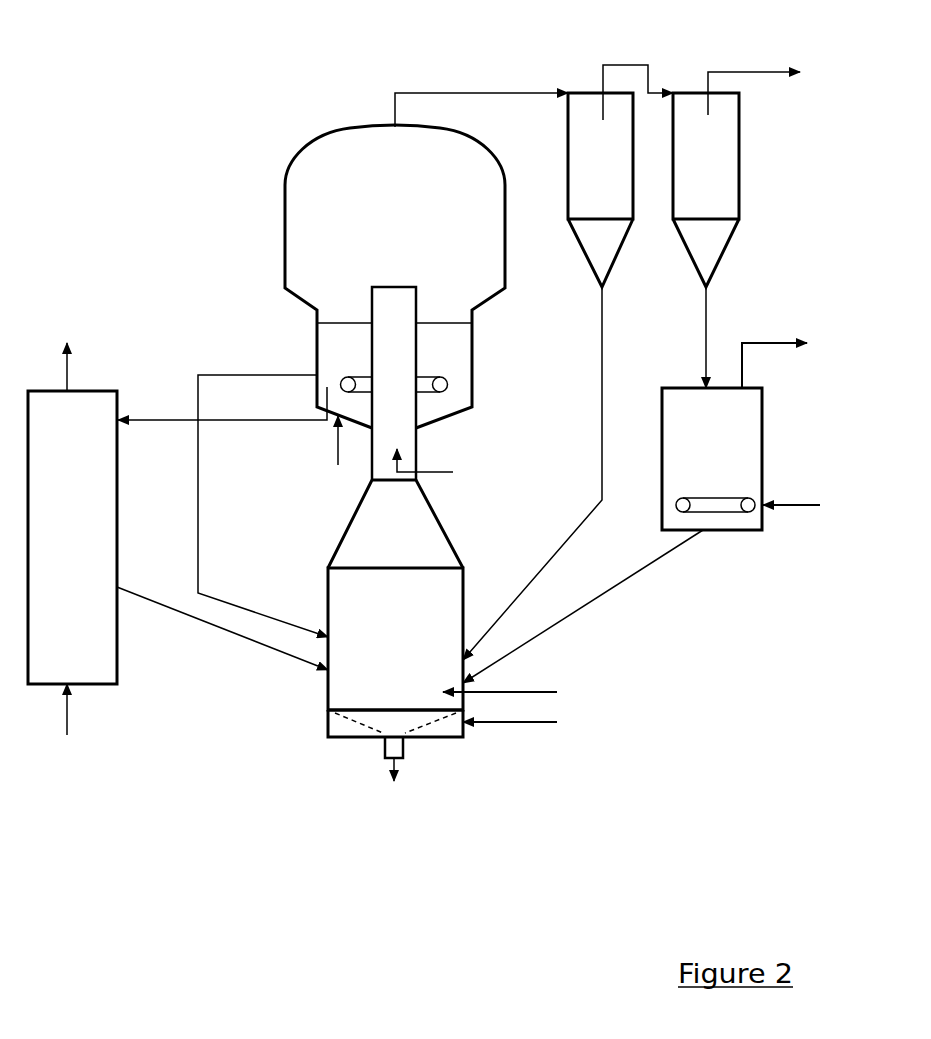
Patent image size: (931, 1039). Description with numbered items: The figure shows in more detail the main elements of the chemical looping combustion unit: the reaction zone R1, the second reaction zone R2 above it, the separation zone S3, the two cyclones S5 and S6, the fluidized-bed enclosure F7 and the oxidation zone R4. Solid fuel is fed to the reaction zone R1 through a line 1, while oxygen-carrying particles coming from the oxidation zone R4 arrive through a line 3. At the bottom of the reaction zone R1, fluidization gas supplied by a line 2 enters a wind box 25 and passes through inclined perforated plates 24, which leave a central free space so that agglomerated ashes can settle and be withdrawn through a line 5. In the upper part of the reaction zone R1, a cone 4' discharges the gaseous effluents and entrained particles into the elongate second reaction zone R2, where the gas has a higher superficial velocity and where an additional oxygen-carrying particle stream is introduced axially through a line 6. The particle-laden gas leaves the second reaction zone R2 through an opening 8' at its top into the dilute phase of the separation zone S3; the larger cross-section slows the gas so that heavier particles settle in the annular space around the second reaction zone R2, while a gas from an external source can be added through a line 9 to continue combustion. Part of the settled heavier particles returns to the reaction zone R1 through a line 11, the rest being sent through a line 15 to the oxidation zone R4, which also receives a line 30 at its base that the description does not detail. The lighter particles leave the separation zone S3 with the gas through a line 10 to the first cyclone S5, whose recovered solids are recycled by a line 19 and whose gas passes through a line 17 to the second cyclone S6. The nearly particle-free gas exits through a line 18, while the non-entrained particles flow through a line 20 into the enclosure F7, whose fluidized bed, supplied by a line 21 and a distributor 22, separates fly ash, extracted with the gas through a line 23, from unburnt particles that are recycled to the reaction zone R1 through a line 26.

The line 1 is at (538, 690).
The line 2 is at (547, 724).
The line 3 is at (268, 655).
The cone 4' is at (357, 524).
The line 5 is at (388, 765).
The line 6 is at (437, 465).
The opening 8' is at (400, 363).
The line 9 is at (337, 442).
The line 10 is at (395, 105).
The line 11 is at (217, 603).
The line 15 is at (164, 417).
The line 17 is at (602, 80).
The line 18 is at (786, 66).
The line 19 is at (553, 552).
The line 20 is at (708, 322).
The line 21 is at (778, 503).
The distributor 22 is at (735, 503).
The line 23 is at (790, 347).
The perforated plates 24 is at (433, 722).
The wind box 25 is at (327, 700).
The line 26 is at (607, 592).
The inlet to R4 30 is at (68, 712).
The reaction zone R1 is at (395, 639).
The second reaction zone R2 is at (408, 358).
The oxidation zone R4 is at (72, 513).
The separation zone S3 is at (395, 276).
The first cyclone S5 is at (575, 195).
The second cyclone S6 is at (740, 140).
The enclosure F7 is at (712, 459).